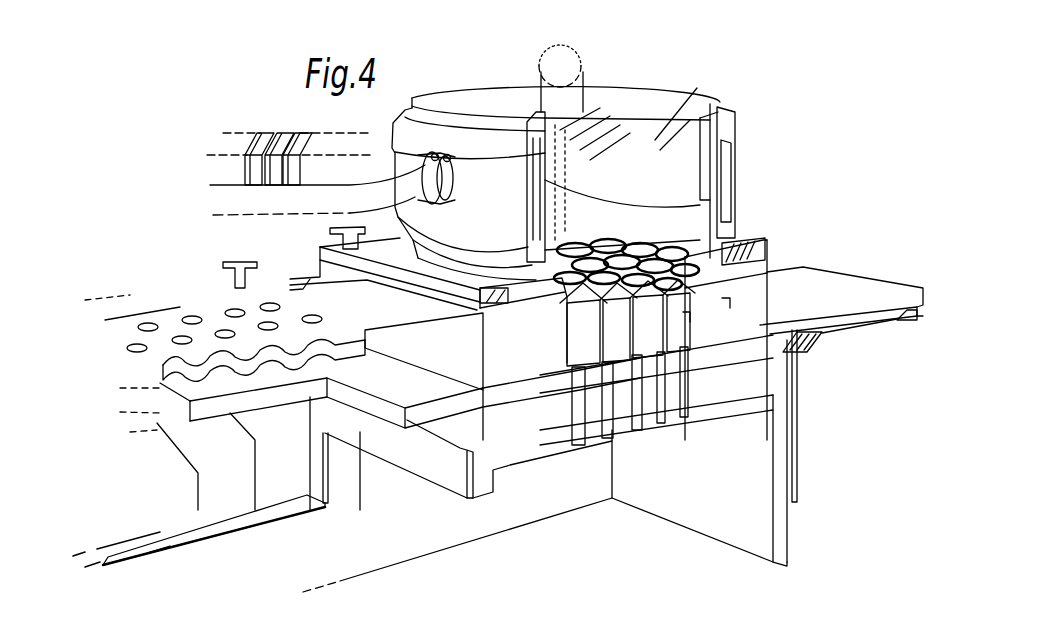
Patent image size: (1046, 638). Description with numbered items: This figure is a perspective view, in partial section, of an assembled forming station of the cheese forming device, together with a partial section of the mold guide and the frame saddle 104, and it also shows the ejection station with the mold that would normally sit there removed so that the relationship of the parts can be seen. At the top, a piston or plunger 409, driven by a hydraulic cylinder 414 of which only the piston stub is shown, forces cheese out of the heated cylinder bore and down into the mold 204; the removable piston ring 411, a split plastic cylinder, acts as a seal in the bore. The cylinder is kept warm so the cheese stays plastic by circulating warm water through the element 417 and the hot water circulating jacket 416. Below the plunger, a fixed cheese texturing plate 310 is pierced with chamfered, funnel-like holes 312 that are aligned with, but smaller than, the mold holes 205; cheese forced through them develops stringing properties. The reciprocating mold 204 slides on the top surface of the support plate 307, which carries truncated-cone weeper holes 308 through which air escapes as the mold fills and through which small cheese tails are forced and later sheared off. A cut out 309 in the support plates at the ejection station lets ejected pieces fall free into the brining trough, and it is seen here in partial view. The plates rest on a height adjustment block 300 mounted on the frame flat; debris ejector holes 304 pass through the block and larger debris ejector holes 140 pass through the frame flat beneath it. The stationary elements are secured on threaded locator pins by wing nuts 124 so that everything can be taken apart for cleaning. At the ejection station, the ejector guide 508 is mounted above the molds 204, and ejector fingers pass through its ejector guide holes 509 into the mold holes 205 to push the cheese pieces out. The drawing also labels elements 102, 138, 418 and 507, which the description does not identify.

The rod 102 is at (160, 550).
The frame saddle 104 is at (168, 530).
The wing nuts 124 is at (345, 228).
The support rail 138 is at (868, 330).
The debris ejector holes 140 is at (573, 433).
The mold 204 is at (722, 303).
The mold holes 205 is at (683, 317).
The height adjustment block 300 is at (473, 425).
The debris ejector holes 304 is at (572, 402).
The support plate 307 is at (820, 293).
The weeper holes 308 is at (553, 367).
The cut out 309 is at (198, 510).
The fixed cheese texturing plate 310 is at (722, 273).
The holes 312 is at (707, 253).
The piston 409 is at (657, 140).
The piston ring 411 is at (708, 132).
The hydraulic cylinder 414 is at (583, 63).
The hot water circulating jacket 416 is at (722, 152).
The warm water circulation element 417 is at (360, 190).
The block 418 is at (735, 235).
The knob 507 is at (245, 283).
The ejector guide 508 is at (220, 290).
The ejector guide holes 509 is at (188, 320).